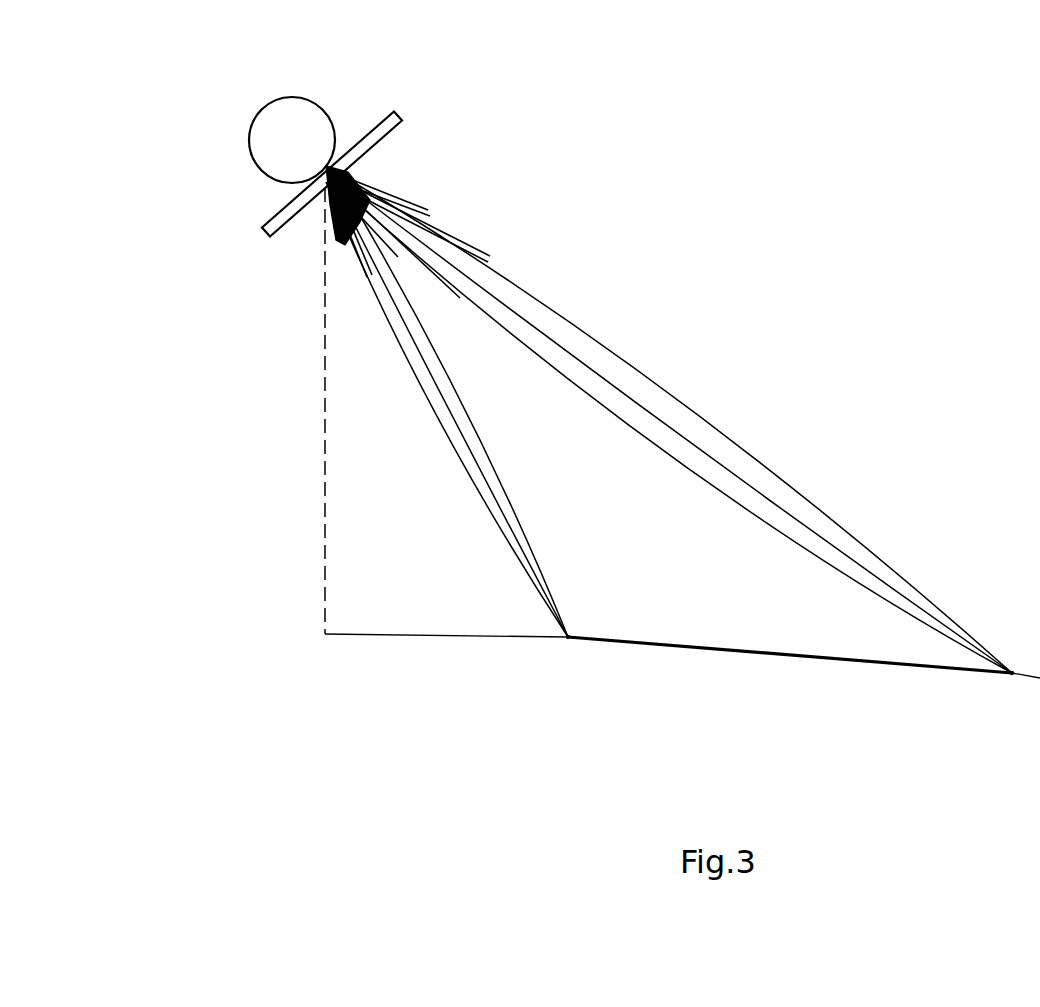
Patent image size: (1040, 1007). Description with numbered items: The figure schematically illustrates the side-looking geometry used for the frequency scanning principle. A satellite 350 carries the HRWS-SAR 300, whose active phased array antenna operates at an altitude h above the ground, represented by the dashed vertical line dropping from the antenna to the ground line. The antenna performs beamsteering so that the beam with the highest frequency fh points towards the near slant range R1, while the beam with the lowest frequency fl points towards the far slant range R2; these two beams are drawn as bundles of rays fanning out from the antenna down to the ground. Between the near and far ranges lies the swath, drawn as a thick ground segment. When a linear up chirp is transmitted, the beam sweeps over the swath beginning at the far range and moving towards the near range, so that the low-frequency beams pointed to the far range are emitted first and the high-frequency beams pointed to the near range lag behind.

The HRWS-SAR 300 is at (397, 122).
The satellite 350 is at (238, 100).
The altitude h is at (311, 411).
The highest frequency fh is at (447, 407).
The lowest frequency fl is at (671, 424).
The near slant range R1 is at (578, 661).
The far slant range R2 is at (1013, 697).
The element swath is at (790, 665).